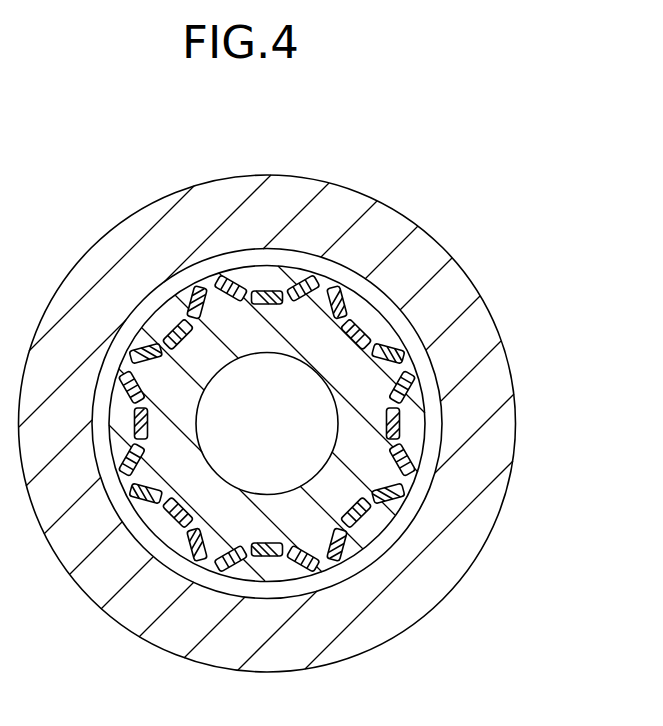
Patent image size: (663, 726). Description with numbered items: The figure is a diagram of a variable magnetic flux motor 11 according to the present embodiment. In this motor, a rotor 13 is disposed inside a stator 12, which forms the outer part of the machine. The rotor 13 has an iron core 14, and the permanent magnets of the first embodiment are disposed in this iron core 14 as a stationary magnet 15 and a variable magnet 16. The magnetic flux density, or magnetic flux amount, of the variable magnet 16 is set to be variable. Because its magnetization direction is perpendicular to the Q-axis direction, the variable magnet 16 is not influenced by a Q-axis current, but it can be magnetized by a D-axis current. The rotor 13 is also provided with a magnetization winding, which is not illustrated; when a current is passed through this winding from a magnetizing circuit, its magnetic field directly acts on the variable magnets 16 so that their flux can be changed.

The variable magnetic flux motor 11 is at (452, 180).
The stator 12 is at (503, 507).
The rotor 13 is at (497, 227).
The iron core 14 is at (383, 341).
The stationary magnet 15 is at (407, 363).
The variable magnet 16 is at (397, 416).